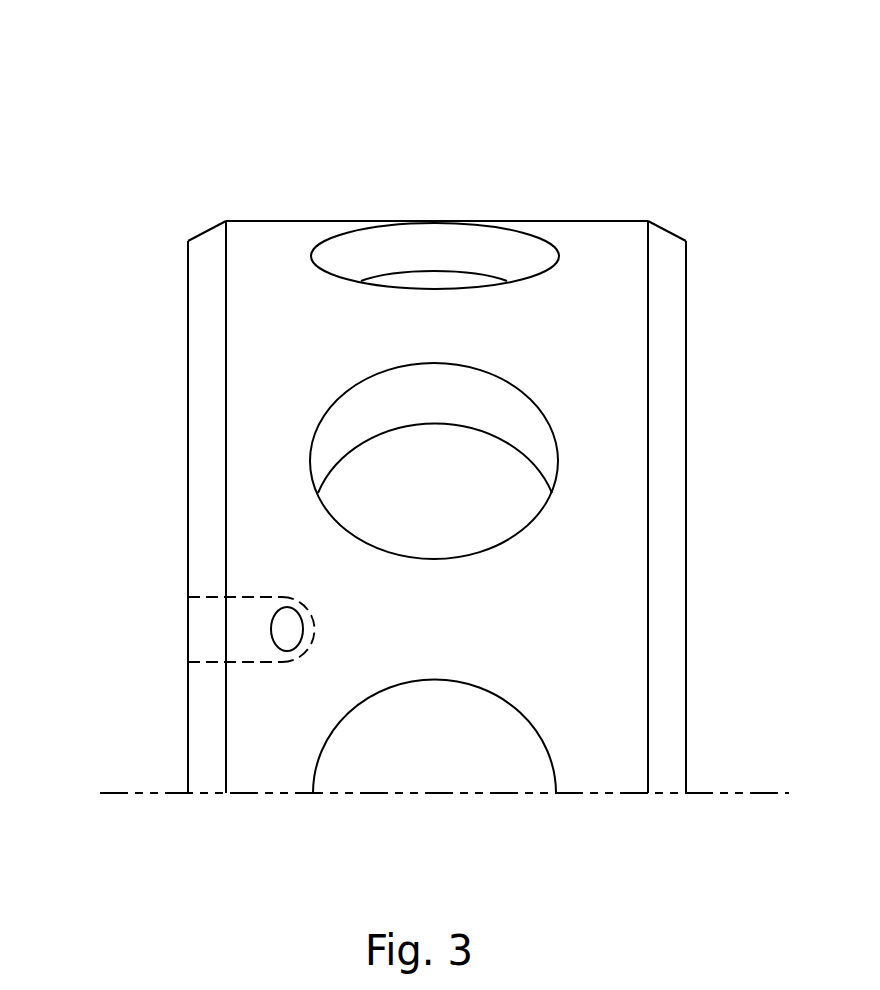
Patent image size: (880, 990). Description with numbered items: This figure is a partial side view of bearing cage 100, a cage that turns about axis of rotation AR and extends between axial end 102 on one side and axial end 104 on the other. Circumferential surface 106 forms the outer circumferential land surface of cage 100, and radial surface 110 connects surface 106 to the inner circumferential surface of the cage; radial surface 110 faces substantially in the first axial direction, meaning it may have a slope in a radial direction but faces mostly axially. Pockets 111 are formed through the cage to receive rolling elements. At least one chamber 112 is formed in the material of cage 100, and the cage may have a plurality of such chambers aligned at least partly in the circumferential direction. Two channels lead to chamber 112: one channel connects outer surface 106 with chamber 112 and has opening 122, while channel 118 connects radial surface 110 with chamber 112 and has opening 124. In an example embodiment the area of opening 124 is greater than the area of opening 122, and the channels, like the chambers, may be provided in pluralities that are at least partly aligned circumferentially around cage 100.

The bearing cage 100 is at (718, 104).
The axial end 102 is at (195, 218).
The axial end 104 is at (687, 219).
The circumferential surface 106 is at (278, 221).
The radial surface 110 is at (188, 470).
The pocket 111 is at (528, 525).
The chamber 112 is at (330, 616).
The channel 118 is at (213, 645).
The opening 122 is at (287, 638).
The opening 124 is at (188, 613).
The axis of rotation AR is at (712, 793).